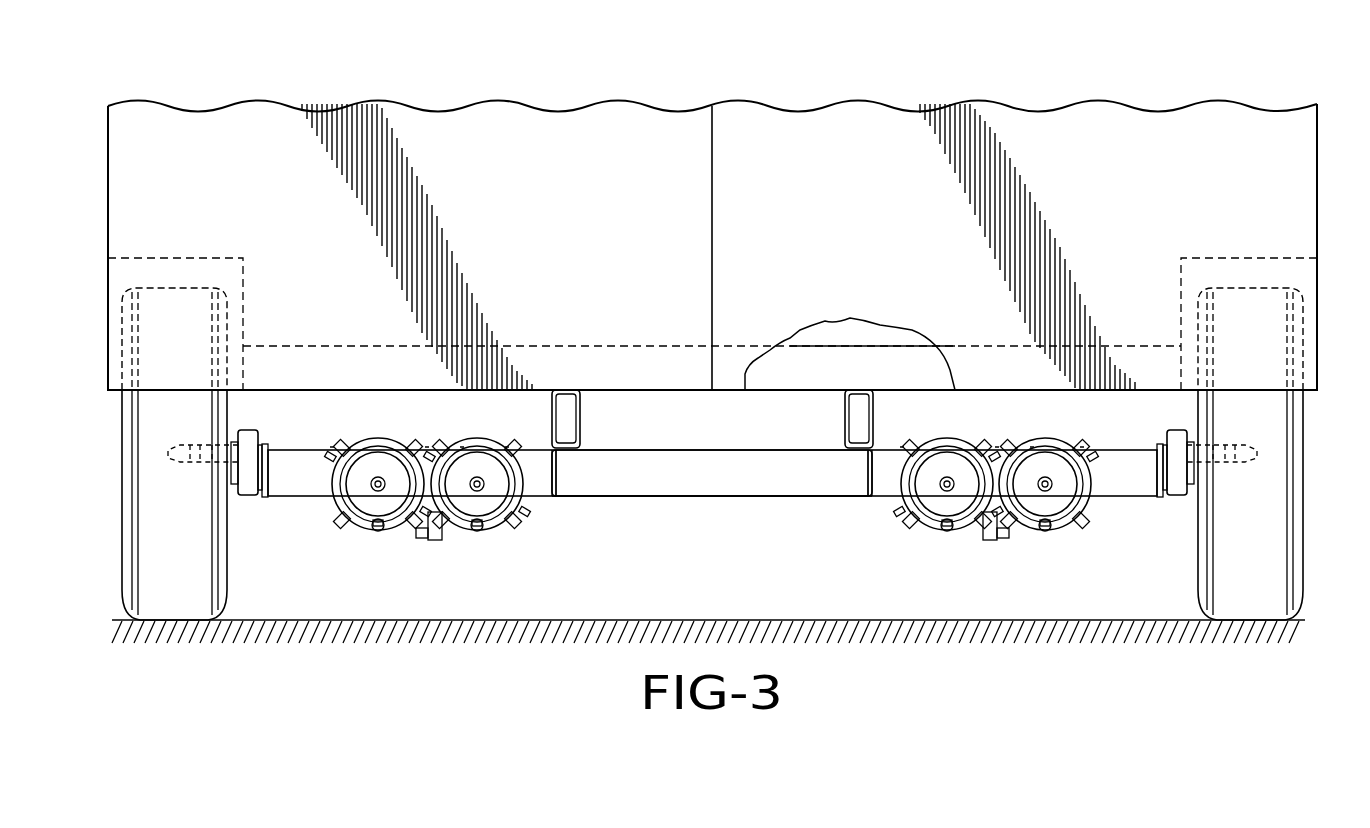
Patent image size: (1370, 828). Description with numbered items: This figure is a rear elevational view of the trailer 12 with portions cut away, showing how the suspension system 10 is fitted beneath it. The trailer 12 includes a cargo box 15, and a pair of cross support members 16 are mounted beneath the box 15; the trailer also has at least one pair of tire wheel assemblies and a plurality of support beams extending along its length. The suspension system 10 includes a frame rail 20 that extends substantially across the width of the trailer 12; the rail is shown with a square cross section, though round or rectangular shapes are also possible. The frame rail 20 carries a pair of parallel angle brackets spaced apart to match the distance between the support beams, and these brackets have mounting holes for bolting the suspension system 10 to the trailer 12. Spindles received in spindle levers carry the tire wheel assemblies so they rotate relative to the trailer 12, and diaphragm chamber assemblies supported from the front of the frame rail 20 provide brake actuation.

The suspension system 10 is at (612, 540).
The trailer 12 is at (1146, 92).
The cargo box 15 is at (213, 108).
The cross support members 16 is at (849, 361).
The frame rail 20 is at (670, 490).